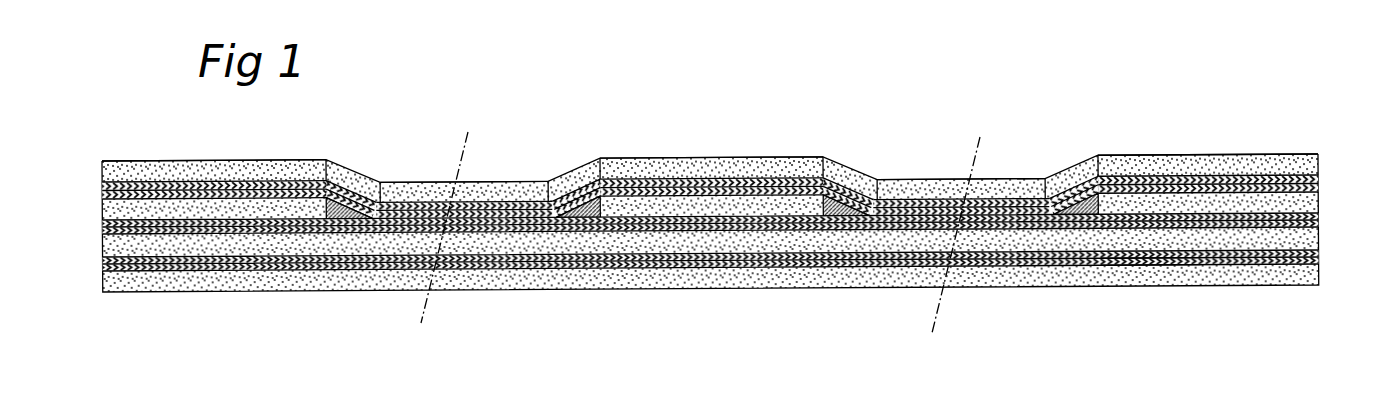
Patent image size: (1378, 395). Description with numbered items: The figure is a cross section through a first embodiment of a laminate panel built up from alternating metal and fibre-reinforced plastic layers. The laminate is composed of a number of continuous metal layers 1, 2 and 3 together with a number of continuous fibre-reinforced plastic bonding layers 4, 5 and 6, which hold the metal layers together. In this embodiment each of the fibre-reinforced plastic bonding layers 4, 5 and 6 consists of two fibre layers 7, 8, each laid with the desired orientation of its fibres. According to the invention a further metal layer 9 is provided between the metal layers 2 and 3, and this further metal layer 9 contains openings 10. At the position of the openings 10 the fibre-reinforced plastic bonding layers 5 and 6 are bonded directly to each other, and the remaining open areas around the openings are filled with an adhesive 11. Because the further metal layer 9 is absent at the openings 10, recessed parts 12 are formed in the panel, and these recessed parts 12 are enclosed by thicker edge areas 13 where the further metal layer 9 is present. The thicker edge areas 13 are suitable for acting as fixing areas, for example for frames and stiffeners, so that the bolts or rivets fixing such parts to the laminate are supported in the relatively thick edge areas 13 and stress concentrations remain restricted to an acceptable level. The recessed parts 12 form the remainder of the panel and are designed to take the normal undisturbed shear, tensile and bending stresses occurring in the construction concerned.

The metal layer 1 is at (1282, 273).
The metal layer 2 is at (1310, 237).
The metal layer 3 is at (1297, 163).
The fibre-reinforced plastic bonding layer 4 is at (1320, 258).
The fibre-reinforced plastic bonding layer 5 is at (1320, 218).
The fibre-reinforced plastic bonding layer 6 is at (1316, 180).
The fibre layer 7 is at (1162, 260).
The fibre layer 8 is at (1150, 257).
The further metal layer 9 is at (1307, 202).
The openings 10 is at (582, 207).
The adhesive 11 is at (342, 193).
The recessed parts 12 is at (478, 180).
The edge areas 13 is at (212, 157).